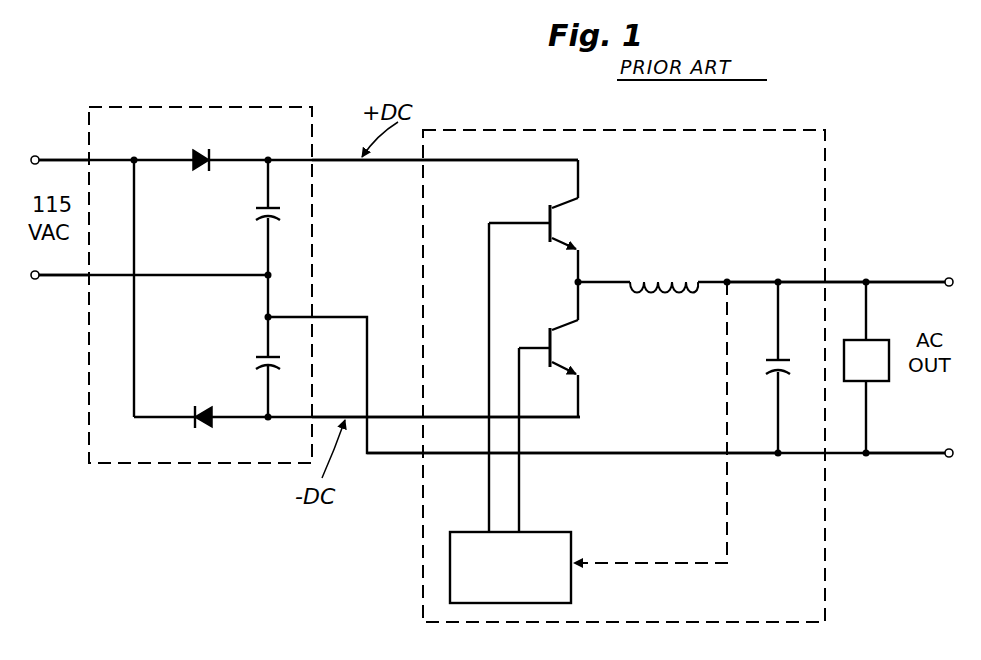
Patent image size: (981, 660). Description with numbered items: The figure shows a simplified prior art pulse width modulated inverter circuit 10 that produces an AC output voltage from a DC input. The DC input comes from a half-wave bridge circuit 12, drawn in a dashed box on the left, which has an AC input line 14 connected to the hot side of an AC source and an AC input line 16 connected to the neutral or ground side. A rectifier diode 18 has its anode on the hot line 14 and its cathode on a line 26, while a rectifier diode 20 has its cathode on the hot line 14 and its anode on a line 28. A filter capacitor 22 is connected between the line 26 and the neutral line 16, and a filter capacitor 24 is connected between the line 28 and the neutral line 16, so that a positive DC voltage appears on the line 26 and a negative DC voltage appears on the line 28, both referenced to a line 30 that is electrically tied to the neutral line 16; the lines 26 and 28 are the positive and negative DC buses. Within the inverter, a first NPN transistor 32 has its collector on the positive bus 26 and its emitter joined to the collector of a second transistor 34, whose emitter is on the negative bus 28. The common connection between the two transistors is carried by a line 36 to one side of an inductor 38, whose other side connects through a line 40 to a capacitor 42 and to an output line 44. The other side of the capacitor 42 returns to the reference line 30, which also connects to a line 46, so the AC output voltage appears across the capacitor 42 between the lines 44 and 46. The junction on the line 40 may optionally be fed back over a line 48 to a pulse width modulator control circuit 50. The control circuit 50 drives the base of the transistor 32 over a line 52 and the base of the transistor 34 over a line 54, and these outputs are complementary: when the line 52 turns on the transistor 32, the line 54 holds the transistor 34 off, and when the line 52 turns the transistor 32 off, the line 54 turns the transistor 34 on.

The pulse width modulated inverter circuit 10 is at (664, 506).
The half-wave bridge circuit 12 is at (208, 326).
The AC input line 14 is at (60, 158).
The AC input line 16 is at (64, 280).
The rectifier diode 18 is at (201, 153).
The rectifier diode 20 is at (203, 428).
The filter capacitor 22 is at (262, 214).
The filter capacitor 24 is at (260, 360).
The line 26 is at (390, 164).
The line 28 is at (388, 415).
The line 30 is at (356, 314).
The first NPN transistor 32 is at (562, 216).
The second transistor 34 is at (562, 350).
The line 36 is at (604, 280).
The inductor 38 is at (660, 296).
The line 40 is at (778, 280).
The capacitor 42 is at (772, 366).
The output line 44 is at (908, 280).
The line 46 is at (900, 456).
The line 48 is at (728, 508).
The pulse width modulator control circuit 50 is at (572, 540).
The line 52 is at (488, 498).
The line 54 is at (520, 486).